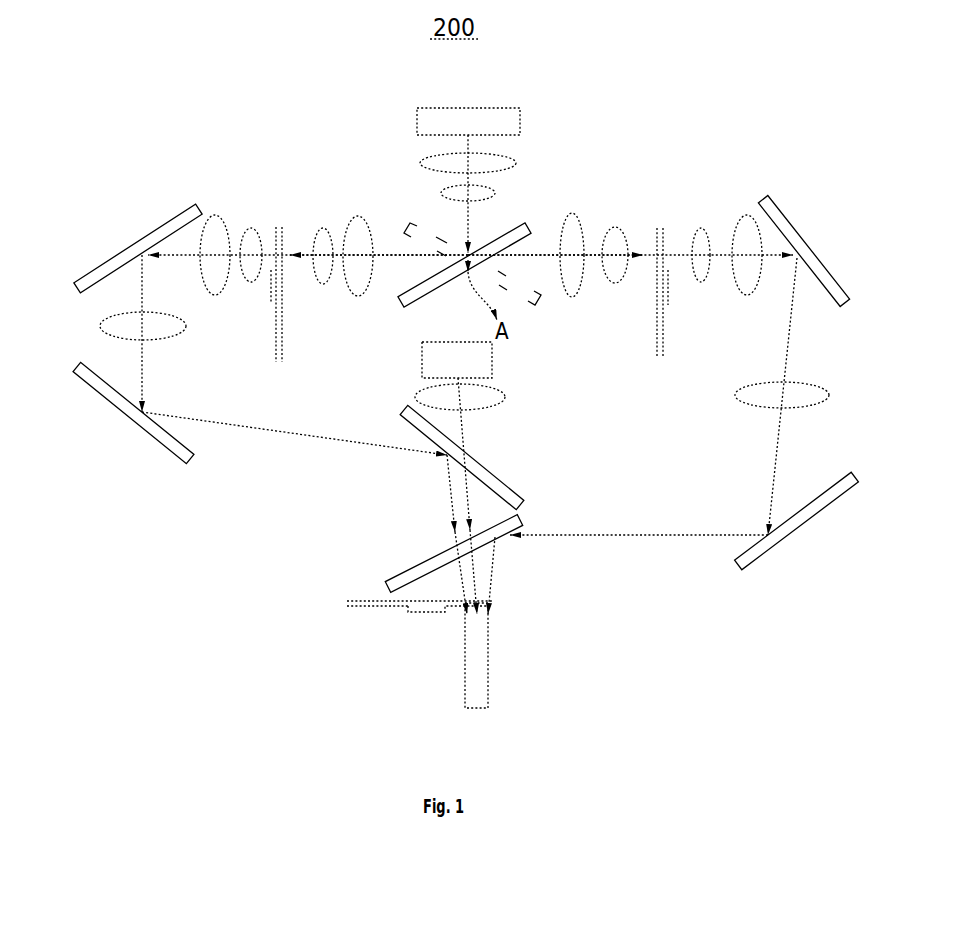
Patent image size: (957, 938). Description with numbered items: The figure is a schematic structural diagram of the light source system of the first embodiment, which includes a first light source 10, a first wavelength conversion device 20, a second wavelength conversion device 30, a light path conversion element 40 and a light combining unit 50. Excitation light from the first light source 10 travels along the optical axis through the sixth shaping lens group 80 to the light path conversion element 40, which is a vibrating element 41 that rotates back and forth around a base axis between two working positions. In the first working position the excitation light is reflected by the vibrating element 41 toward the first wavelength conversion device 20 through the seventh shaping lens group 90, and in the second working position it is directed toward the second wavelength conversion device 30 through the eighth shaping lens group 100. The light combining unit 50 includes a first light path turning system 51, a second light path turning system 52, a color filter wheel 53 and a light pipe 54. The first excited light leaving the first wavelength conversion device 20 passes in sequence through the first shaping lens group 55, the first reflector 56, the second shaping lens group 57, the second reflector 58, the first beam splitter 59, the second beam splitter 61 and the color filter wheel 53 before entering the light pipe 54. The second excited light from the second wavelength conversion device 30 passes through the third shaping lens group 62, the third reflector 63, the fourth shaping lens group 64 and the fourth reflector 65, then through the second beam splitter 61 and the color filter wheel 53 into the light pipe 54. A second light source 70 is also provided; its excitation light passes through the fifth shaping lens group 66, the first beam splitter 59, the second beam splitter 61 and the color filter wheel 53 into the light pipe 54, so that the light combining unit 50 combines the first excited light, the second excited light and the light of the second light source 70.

The first light source 10 is at (478, 118).
The sixth shaping lens group 80 is at (505, 181).
The first reflector 56 is at (138, 243).
The first shaping lens group 55 is at (233, 222).
The first wavelength conversion device 20 is at (277, 325).
The seventh shaping lens group 90 is at (340, 225).
The light path conversion element 40 is at (402, 300).
The vibrating element 41 is at (472, 264).
The eighth shaping lens group 100 is at (605, 222).
The second wavelength conversion device 30 is at (660, 335).
The third shaping lens group 62 is at (725, 228).
The third reflector 63 is at (815, 258).
The fourth shaping lens group 64 is at (808, 392).
The second shaping lens group 57 is at (100, 326).
The second reflector 58 is at (125, 410).
The first light path turning system 51 is at (162, 465).
The second light source 70 is at (480, 355).
The fifth shaping lens group 66 is at (505, 397).
The first beam splitter 59 is at (487, 478).
The second beam splitter 61 is at (435, 562).
The fourth reflector 65 is at (797, 520).
The second light path turning system 52 is at (762, 572).
The color filter wheel 53 is at (362, 605).
The light pipe 54 is at (483, 649).
The light combining unit 50 is at (447, 682).